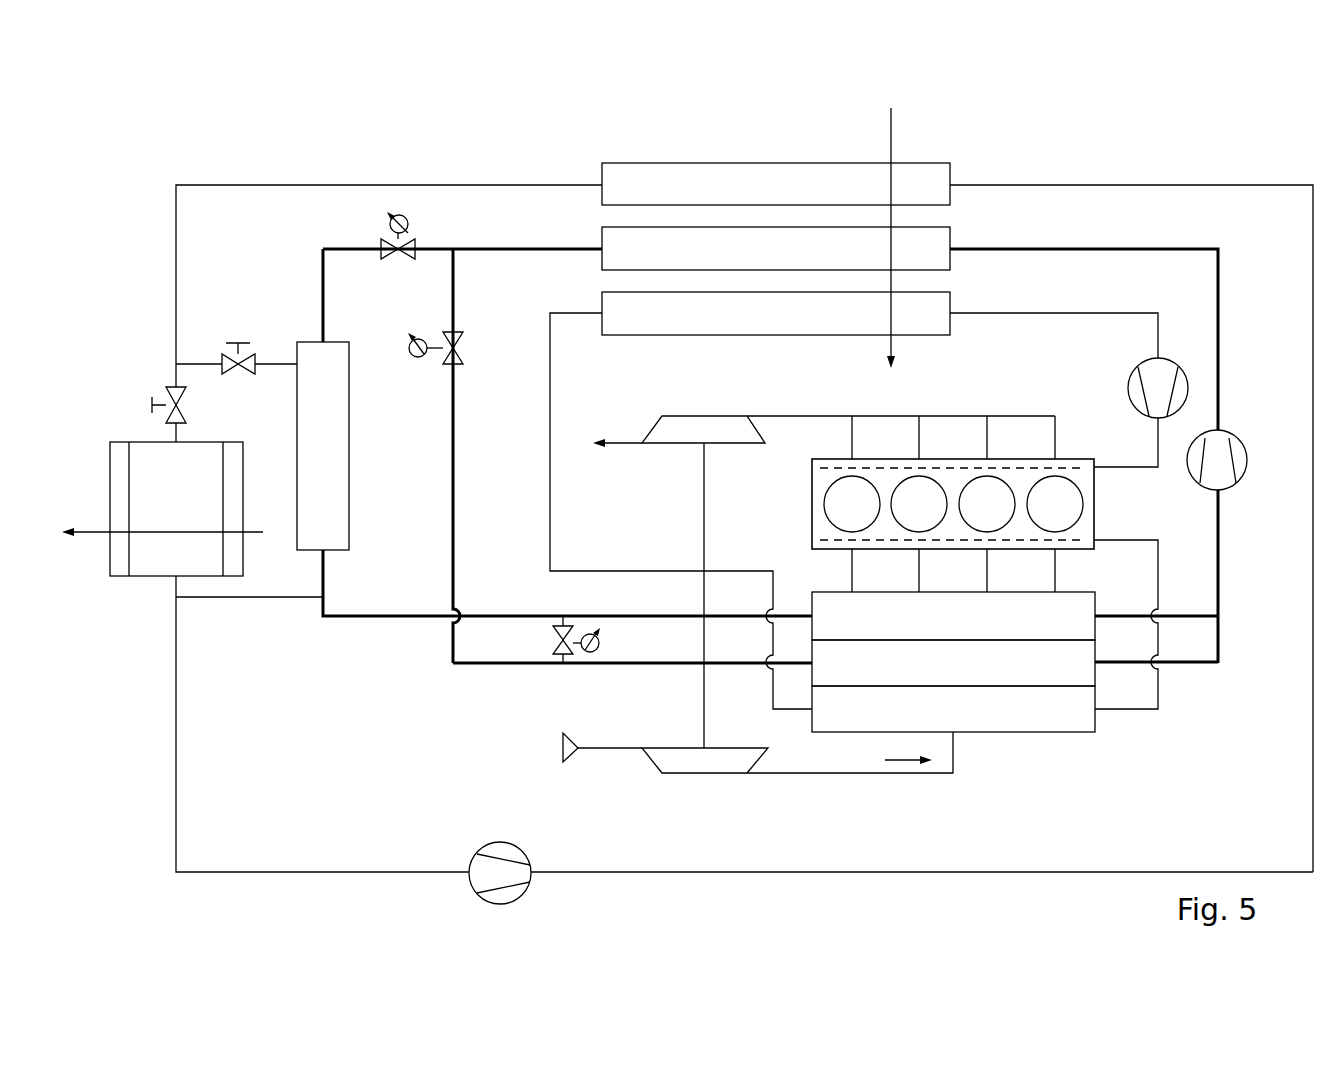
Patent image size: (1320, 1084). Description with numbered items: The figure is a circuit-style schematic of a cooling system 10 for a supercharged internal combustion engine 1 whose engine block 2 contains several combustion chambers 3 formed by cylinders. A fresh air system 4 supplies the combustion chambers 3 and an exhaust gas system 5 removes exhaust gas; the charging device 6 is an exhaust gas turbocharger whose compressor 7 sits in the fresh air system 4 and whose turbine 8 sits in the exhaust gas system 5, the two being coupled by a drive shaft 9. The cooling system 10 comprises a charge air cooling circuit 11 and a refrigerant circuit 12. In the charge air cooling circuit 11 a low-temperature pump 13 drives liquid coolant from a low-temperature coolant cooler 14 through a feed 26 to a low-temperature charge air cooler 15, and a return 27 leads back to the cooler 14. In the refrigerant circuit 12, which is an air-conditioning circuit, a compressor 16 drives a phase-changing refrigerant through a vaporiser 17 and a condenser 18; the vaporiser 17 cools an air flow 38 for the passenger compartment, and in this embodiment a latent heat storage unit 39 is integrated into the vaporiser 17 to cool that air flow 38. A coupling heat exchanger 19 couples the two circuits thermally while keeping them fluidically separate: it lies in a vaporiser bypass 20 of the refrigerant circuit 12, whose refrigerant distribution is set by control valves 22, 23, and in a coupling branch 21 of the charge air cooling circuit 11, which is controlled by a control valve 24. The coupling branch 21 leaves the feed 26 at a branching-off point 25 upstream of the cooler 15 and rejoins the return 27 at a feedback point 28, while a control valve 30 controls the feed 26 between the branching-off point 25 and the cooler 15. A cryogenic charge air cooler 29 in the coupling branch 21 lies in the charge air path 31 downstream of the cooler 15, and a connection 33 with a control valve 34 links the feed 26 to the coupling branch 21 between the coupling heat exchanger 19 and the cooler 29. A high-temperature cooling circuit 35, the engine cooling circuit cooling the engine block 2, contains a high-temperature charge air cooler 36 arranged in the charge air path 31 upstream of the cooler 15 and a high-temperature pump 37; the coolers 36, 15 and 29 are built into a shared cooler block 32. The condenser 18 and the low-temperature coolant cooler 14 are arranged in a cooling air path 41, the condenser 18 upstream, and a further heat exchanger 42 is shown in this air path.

The internal combustion engine 1 is at (1082, 432).
The engine block 2 is at (800, 507).
The combustion chambers 3 is at (1061, 517).
The fresh air system 4 is at (852, 788).
The exhaust gas system 5 is at (962, 404).
The charging device 6 is at (611, 773).
The compressor 7 is at (700, 770).
The turbine 8 is at (703, 428).
The drive shaft 9 is at (703, 525).
The cooling system 10 is at (318, 166).
The charge air cooling circuit 11 is at (1228, 346).
The refrigerant circuit 12 is at (1119, 177).
The low-temperature pump 13 is at (1240, 432).
The low-temperature coolant cooler 14 is at (764, 261).
The low-temperature charge air cooler 15 is at (941, 675).
The compressor 16 is at (503, 840).
The vaporiser 17 is at (164, 510).
The condenser 18 is at (764, 197).
The coupling heat exchanger 19 is at (311, 453).
The vaporiser bypass 20 is at (277, 360).
The coupling branch 21 is at (383, 622).
The control valve 22 is at (166, 400).
The control valve 23 is at (245, 378).
The control valve 24 is at (395, 262).
The branching-off point 25 is at (452, 246).
The feed 26 is at (456, 467).
The return 27 is at (1220, 562).
The feedback point 28 is at (1220, 613).
The cryogenic charge air cooler 29 is at (941, 629).
The control valve 30 is at (466, 352).
The charge air path 31 is at (902, 762).
The cooler block 32 is at (1040, 735).
The connection 33 is at (556, 626).
The control valve 34 is at (552, 643).
The high-temperature cooling circuit 35 is at (1171, 694).
The high-temperature charge air cooler 36 is at (941, 721).
The high-temperature pump 37 is at (1167, 357).
The air flow 38 is at (83, 537).
The latent heat storage unit 39 is at (122, 565).
The cooling air path 41 is at (893, 128).
The heat exchanger 42 is at (764, 326).